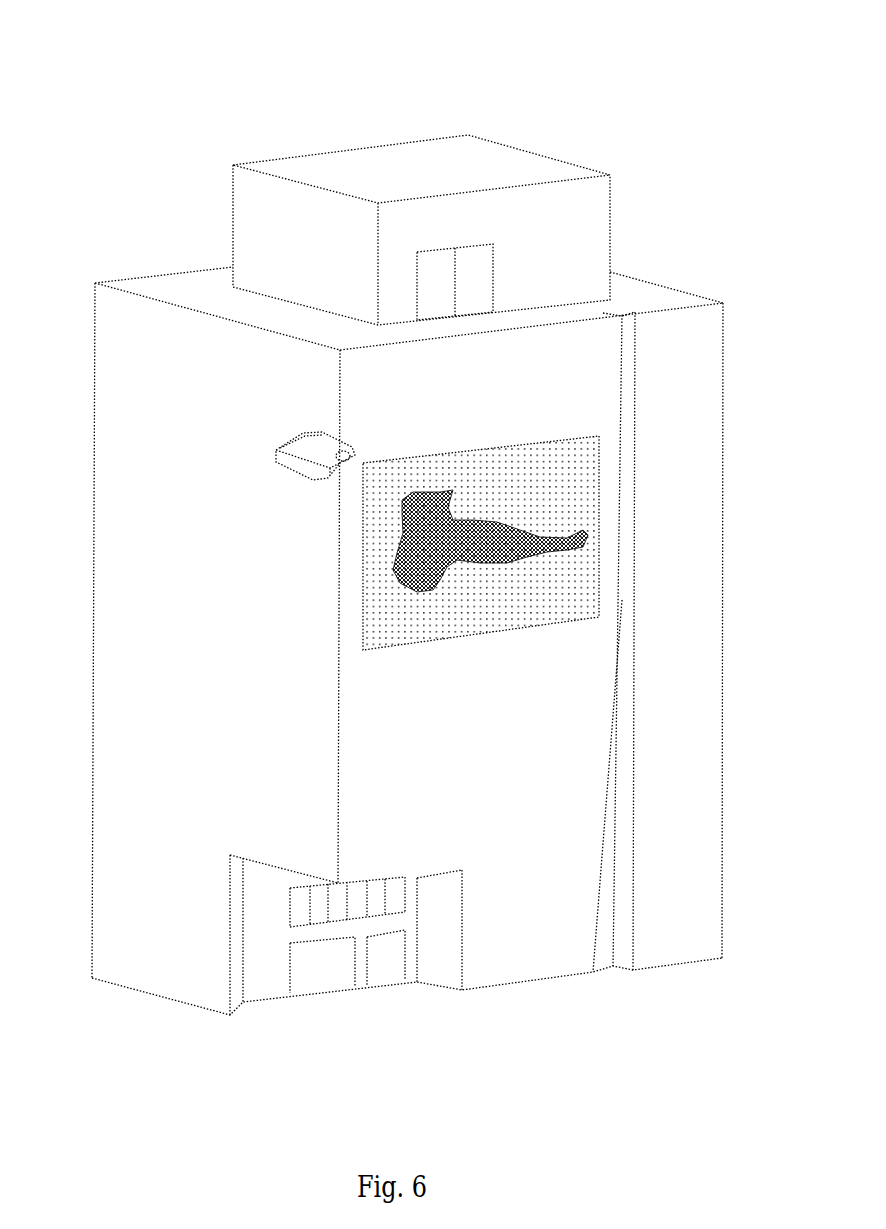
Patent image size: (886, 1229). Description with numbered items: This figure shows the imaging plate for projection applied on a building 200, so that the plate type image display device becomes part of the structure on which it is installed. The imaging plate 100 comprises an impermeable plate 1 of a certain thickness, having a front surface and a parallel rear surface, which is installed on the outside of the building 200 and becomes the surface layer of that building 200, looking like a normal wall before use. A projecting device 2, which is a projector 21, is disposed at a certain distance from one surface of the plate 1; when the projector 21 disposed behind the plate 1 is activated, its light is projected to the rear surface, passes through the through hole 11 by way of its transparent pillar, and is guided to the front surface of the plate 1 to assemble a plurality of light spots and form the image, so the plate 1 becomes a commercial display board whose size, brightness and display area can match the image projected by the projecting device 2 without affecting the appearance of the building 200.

The imaging plate 100 is at (395, 417).
The building 200 is at (220, 142).
The plate 1 is at (605, 485).
The through hole 11 is at (598, 457).
The projecting device 2 is at (277, 478).
The projector 21 is at (300, 433).